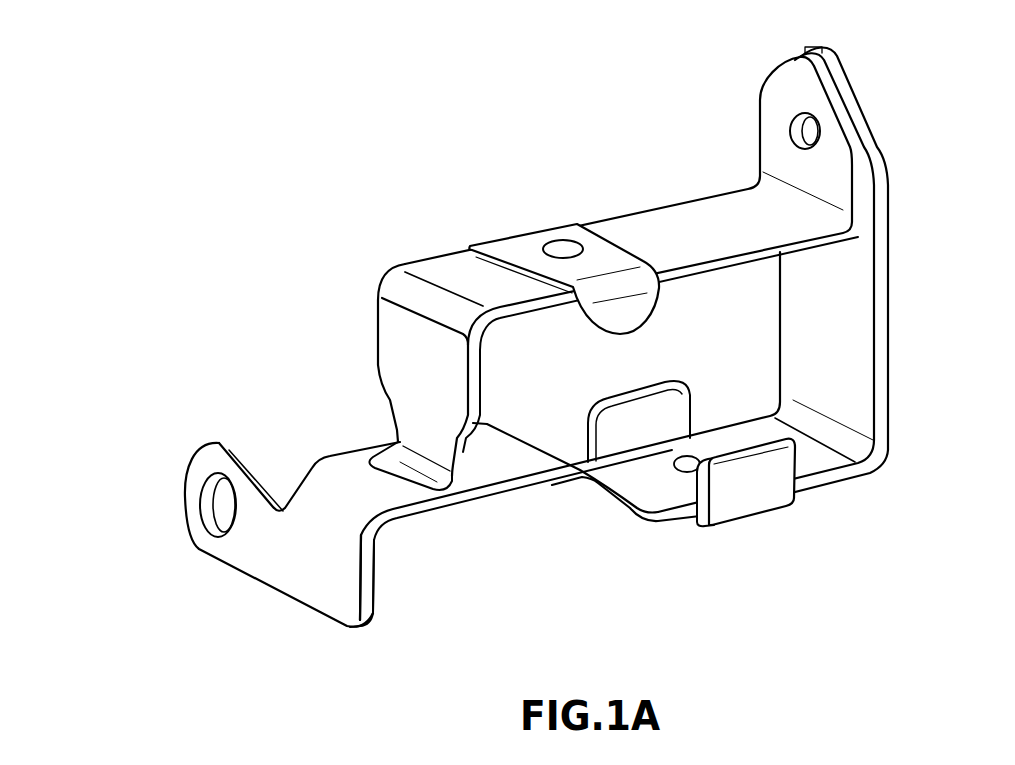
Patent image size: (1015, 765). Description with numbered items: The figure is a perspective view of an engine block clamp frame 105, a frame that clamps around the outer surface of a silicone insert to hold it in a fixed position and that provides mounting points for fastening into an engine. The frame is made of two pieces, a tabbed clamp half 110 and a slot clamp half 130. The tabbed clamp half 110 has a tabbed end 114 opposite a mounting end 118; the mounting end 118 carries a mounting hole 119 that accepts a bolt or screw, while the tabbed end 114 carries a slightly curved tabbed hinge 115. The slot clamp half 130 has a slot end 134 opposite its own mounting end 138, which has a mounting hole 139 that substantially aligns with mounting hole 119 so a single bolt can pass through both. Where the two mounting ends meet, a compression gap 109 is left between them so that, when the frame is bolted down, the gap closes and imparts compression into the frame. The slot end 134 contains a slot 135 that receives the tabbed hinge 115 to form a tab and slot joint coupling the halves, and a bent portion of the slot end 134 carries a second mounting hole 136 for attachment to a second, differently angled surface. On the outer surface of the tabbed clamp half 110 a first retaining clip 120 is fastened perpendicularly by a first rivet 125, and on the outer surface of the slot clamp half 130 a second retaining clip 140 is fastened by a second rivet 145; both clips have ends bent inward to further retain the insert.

The engine block clamp frame 105 is at (534, 343).
The compression gap 109 is at (812, 46).
The tabbed clamp half 110 is at (560, 295).
The tabbed end 114 is at (460, 436).
The tabbed hinge 115 is at (437, 463).
The mounting end 118 is at (756, 113).
The mounting hole 119 is at (797, 140).
The first retaining clip 120 is at (564, 233).
The first rivet 125 is at (563, 250).
The slot clamp half 130 is at (534, 347).
The slot end 134 is at (241, 557).
The slot 135 is at (427, 478).
The second mounting hole 136 is at (210, 517).
The mounting end 138 is at (768, 271).
The mounting hole 139 is at (857, 100).
The second retaining clip 140 is at (753, 493).
The second rivet 145 is at (687, 465).